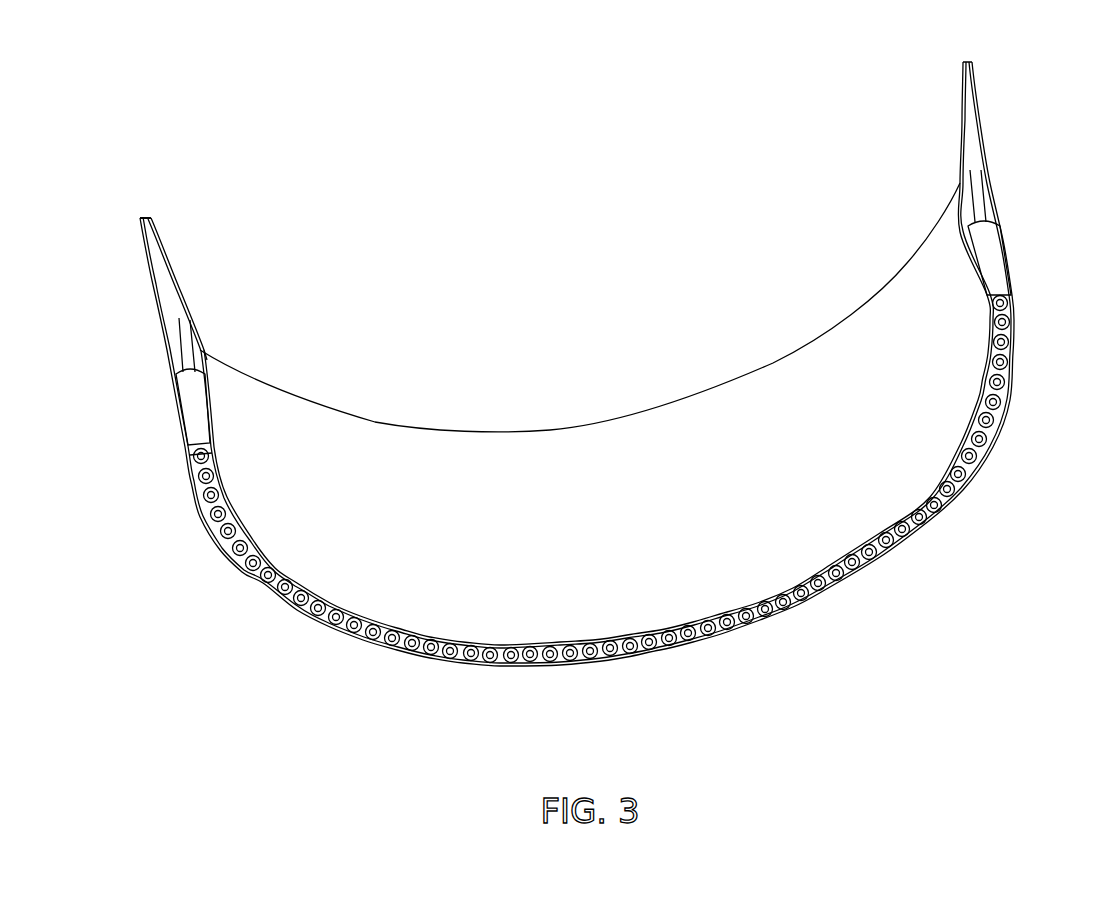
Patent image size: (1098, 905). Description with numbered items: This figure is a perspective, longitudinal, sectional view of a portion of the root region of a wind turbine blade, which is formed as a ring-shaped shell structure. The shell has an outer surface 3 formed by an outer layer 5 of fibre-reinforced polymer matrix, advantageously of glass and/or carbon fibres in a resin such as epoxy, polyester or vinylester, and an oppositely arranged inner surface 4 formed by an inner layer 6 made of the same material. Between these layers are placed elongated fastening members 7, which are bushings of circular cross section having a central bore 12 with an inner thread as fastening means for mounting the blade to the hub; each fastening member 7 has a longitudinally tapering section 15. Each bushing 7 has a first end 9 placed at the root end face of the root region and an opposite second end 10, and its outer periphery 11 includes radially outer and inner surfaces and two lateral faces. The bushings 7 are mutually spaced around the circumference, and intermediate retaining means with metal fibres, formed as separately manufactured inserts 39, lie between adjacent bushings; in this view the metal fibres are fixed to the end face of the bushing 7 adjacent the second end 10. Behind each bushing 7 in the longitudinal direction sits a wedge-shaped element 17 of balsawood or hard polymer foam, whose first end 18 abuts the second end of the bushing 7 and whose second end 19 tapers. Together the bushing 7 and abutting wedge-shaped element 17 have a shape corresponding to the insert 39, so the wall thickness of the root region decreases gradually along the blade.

The outer surface 3 is at (573, 665).
The inner surface 4 is at (352, 457).
The outer layer 5 is at (712, 640).
The inner layer 6 is at (962, 140).
The fastening member 7 is at (192, 443).
The first end 9 is at (188, 475).
The second end 10 is at (168, 334).
The outer periphery 11 is at (182, 402).
The central bore 12 is at (302, 607).
The longitudinally tapering section 15 is at (192, 422).
The wedge-shaped element 17 is at (168, 312).
The first end 18 is at (203, 342).
The second end 19 is at (150, 240).
The insert 39 is at (482, 664).